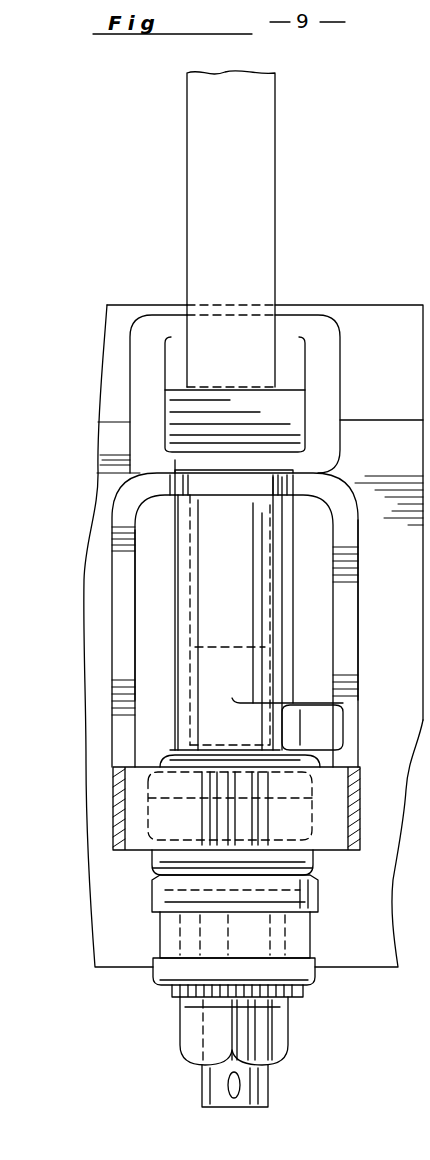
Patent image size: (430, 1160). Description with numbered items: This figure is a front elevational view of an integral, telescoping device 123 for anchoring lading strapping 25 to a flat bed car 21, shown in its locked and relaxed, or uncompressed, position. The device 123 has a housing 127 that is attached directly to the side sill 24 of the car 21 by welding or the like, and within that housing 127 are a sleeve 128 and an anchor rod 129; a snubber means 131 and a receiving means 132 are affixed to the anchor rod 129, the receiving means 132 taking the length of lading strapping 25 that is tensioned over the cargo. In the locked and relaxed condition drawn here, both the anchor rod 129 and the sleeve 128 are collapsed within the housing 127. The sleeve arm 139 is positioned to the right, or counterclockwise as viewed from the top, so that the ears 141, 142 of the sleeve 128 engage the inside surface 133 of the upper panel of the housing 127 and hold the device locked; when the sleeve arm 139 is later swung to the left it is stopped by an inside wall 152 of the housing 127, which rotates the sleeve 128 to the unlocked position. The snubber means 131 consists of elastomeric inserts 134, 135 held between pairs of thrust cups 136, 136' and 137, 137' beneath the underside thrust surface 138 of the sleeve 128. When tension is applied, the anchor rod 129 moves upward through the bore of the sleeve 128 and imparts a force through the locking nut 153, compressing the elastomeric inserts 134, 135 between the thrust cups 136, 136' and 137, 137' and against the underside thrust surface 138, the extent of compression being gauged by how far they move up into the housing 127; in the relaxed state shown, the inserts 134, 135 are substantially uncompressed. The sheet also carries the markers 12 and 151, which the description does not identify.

The lading strapping 25 is at (240, 167).
The flat bed car 21 is at (388, 379).
The section line 12 is at (100, 298).
The receiving means 132 is at (315, 335).
The inside surface 133 is at (137, 508).
The integral telescoping device 123 is at (363, 488).
The side sill 24 is at (400, 640).
The housing 127 is at (343, 520).
The inside wall 152 is at (135, 595).
The bore 151 is at (332, 540).
The ear 142 is at (178, 542).
The ear 141 is at (290, 603).
The sleeve 128 is at (238, 628).
The sleeve arm 139 is at (364, 707).
The underside thrust surface 138 is at (337, 727).
The thrust cup 136' is at (285, 754).
The snubber means 131 is at (146, 885).
The thrust cup 136 is at (267, 866).
The elastomeric insert 134 is at (318, 882).
The thrust cup 137' is at (339, 907).
The elastomeric insert 135 is at (310, 938).
The thrust cup 137 is at (262, 983).
The locking nut 153 is at (288, 1038).
The anchor rod 129 is at (268, 1095).